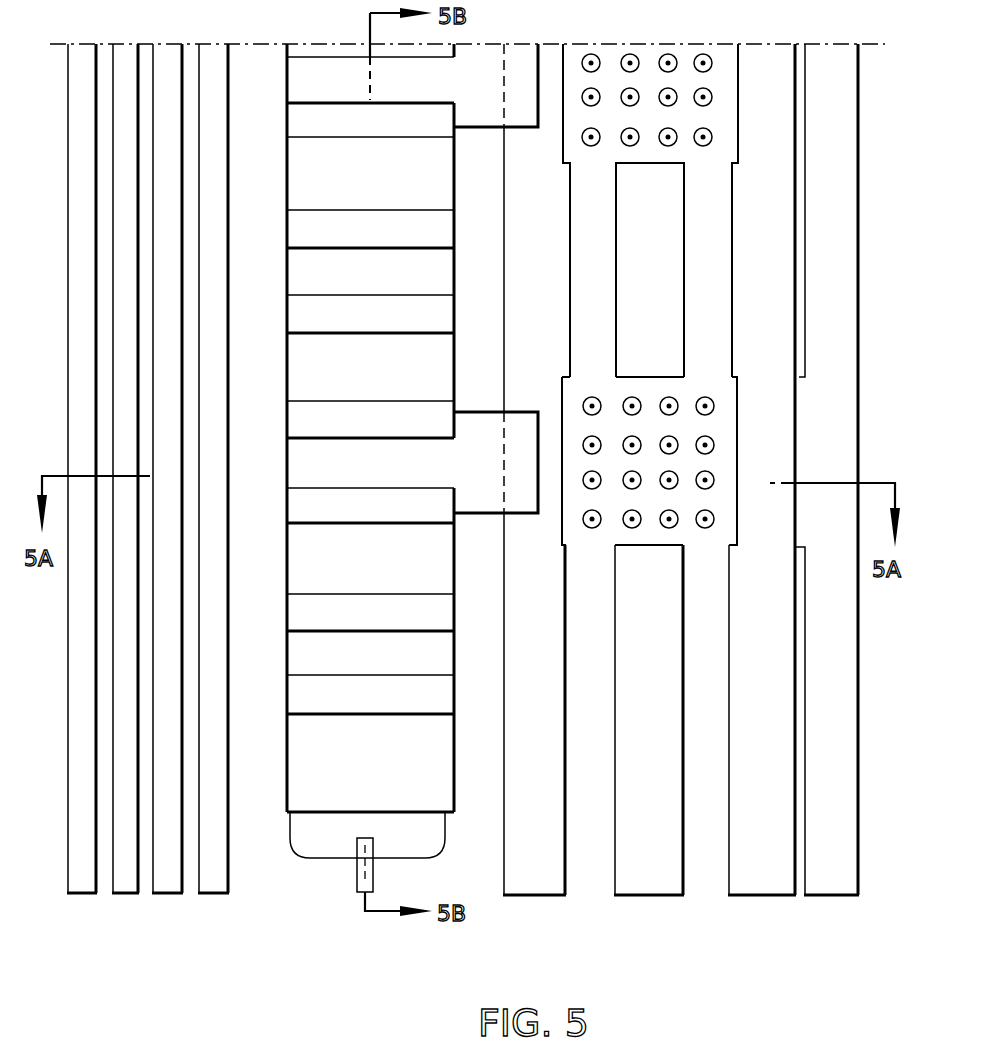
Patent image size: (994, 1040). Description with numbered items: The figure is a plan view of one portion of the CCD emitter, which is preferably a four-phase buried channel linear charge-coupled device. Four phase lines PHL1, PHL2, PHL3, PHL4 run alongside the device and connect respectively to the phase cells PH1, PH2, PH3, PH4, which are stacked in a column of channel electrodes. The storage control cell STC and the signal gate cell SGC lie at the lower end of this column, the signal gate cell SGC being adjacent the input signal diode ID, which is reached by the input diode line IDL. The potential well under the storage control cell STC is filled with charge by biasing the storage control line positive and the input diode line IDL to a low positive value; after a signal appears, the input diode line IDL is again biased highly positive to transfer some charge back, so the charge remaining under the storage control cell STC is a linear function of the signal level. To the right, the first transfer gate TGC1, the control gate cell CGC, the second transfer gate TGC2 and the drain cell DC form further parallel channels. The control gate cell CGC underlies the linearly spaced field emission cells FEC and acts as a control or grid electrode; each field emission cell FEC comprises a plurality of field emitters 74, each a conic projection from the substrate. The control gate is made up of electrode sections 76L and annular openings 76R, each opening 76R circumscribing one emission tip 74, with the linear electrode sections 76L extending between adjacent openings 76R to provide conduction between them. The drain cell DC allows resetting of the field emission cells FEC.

The phase line PHL1 is at (226, 893).
The phase line PHL2 is at (163, 893).
The phase line PHL3 is at (122, 893).
The phase line PHL4 is at (75, 893).
The phase cell PH1 is at (424, 586).
The phase cell PH2 is at (440, 469).
The phase cell PH3 is at (434, 371).
The phase cell PH4 is at (371, 272).
The storage control cell STC is at (430, 663).
The signal gate cell SGC is at (432, 796).
The input signal diode ID is at (432, 833).
The input diode line IDL is at (373, 873).
The first transfer gate TGC1 is at (552, 748).
The control gate cell CGC is at (670, 748).
The second transfer gate TGC2 is at (783, 748).
The drain cell DC is at (845, 748).
The field emission cell FEC is at (750, 137).
The annular opening 76R is at (632, 397).
The field emitter 74 is at (672, 401).
The control gate electrode 76L is at (648, 528).